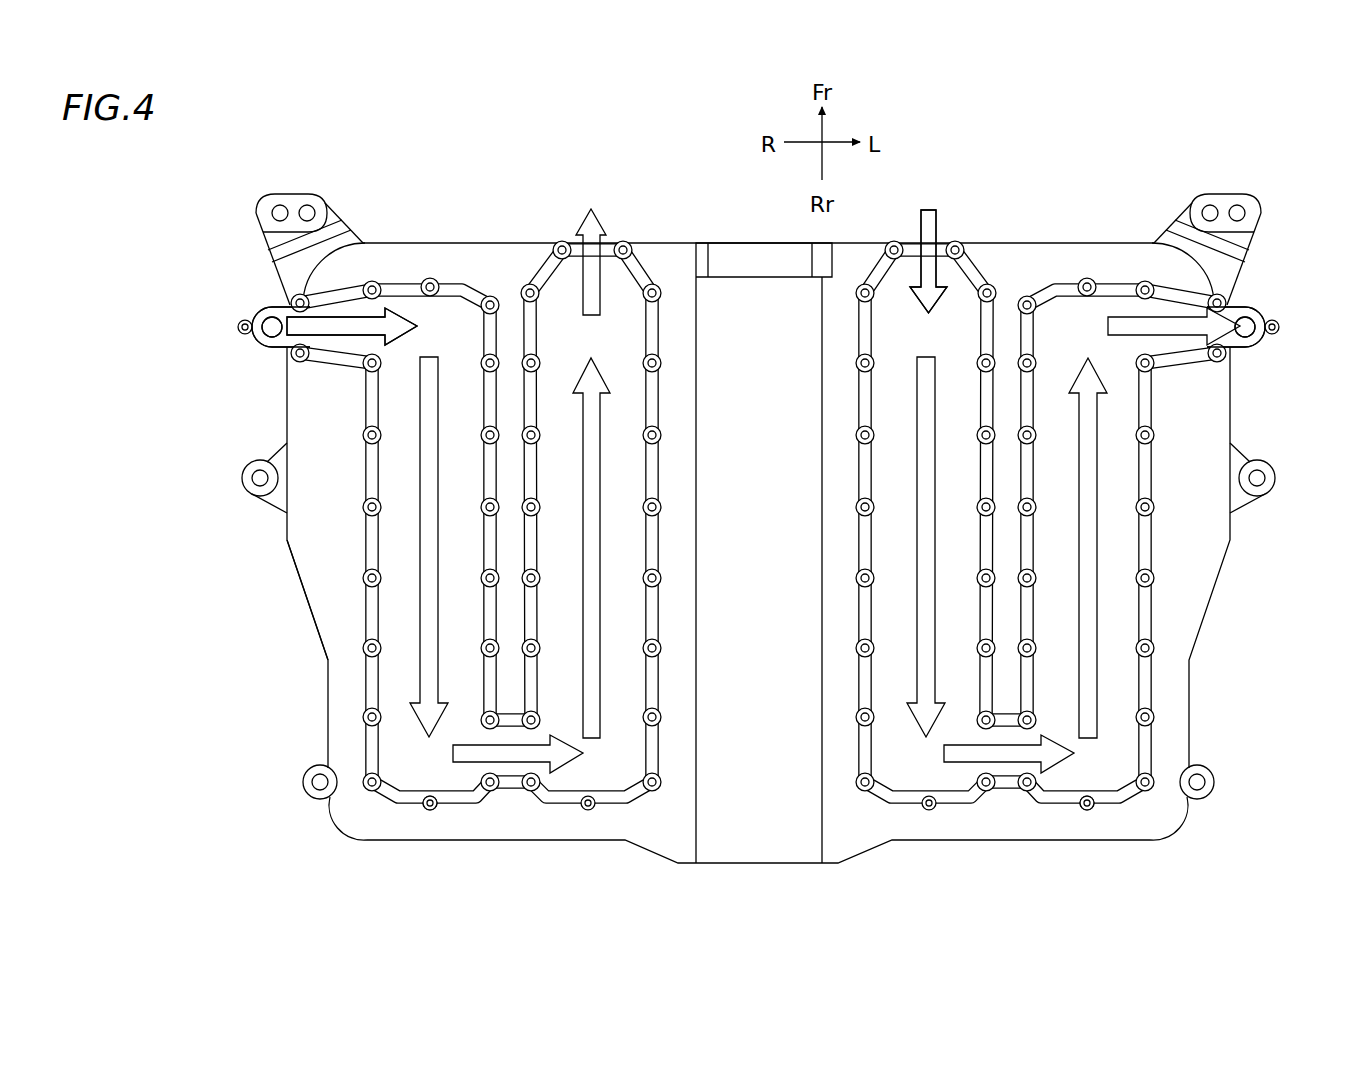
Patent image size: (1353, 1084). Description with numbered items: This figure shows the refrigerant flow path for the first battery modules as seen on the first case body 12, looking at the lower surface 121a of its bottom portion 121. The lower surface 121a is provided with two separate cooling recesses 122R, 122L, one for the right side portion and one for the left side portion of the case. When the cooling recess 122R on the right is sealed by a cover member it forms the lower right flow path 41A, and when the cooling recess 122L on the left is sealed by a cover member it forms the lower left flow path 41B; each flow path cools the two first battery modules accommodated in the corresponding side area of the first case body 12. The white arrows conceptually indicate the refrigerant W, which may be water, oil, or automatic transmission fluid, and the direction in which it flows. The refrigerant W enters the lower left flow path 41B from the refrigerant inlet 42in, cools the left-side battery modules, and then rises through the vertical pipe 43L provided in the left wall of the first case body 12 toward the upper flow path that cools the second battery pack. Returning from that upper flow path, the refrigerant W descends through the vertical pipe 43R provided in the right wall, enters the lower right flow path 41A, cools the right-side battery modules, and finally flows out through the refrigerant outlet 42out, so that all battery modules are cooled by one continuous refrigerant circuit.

The first case body 12 is at (395, 243).
The lower right flow path 41A is at (383, 618).
The lower left flow path 41B is at (1133, 596).
The refrigerant inlet 42in is at (917, 248).
The refrigerant outlet 42out is at (605, 243).
The vertical pipe 43R is at (262, 308).
The vertical pipe 43L is at (1258, 312).
The bottom portion 121 is at (1192, 732).
The lower surface 121a is at (317, 589).
The cooling recess 122R is at (413, 798).
The cooling recess 122L is at (1062, 803).
The refrigerant W is at (326, 308).